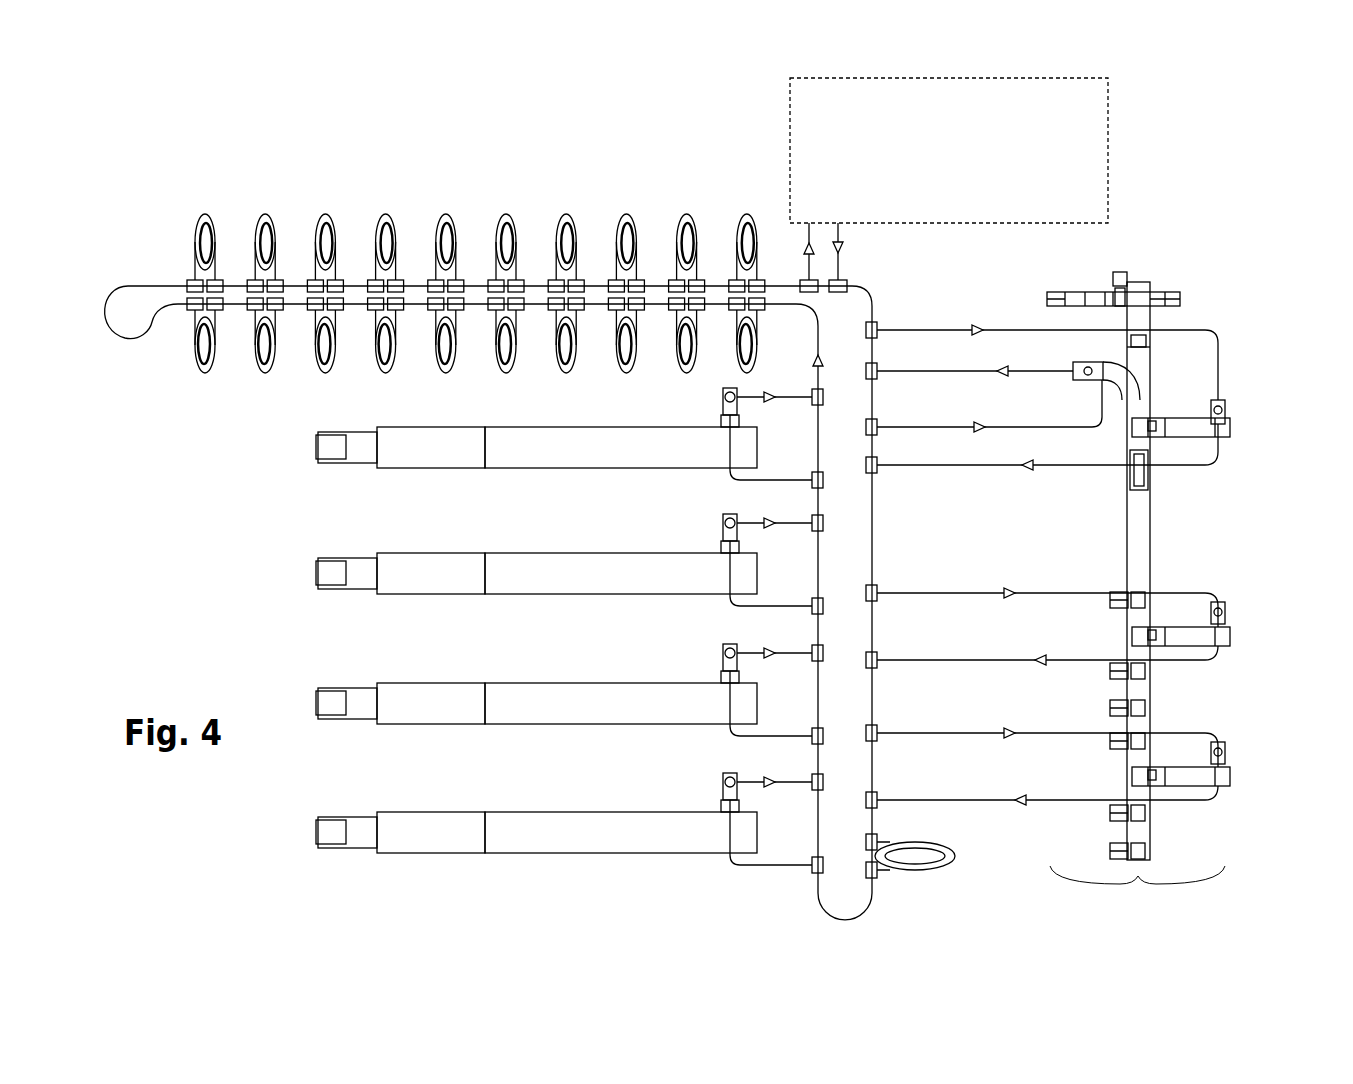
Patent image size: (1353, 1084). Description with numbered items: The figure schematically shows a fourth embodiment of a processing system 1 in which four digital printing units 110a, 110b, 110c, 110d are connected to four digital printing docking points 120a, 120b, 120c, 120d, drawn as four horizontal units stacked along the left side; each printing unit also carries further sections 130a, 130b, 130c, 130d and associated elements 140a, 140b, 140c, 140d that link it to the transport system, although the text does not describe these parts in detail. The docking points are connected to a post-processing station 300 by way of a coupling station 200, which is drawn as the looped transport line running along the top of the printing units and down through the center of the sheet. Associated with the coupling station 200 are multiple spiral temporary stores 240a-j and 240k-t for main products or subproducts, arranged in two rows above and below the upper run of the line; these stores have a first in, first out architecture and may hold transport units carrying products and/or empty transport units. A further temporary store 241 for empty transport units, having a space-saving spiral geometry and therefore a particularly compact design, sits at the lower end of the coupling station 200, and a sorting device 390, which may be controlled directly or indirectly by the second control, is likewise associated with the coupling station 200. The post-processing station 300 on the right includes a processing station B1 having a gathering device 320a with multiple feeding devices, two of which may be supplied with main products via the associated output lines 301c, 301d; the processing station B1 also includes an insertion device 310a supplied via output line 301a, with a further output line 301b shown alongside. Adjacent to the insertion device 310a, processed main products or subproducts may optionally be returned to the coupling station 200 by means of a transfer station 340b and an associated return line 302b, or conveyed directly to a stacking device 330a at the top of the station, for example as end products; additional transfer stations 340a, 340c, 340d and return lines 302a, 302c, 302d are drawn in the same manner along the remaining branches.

The processing system 1 is at (175, 183).
The coupling station 200 is at (795, 900).
The temporary stores 240a-j is at (763, 200).
The temporary stores 240k-t is at (763, 378).
The sorting device 390 is at (948, 157).
The post-processing station 300 is at (1170, 222).
The gathering device 320a is at (1069, 829).
The insertion device 310a is at (1142, 474).
The stacking device 330a is at (1172, 279).
The output line 301a is at (1015, 330).
The output line 301b is at (1017, 427).
The output line 301c is at (1062, 593).
The output line 301d is at (1062, 733).
The return line 302a is at (998, 465).
The return line 302b is at (1042, 371).
The return line 302c is at (1012, 660).
The return line 302d is at (1000, 800).
The transfer station 340a is at (1224, 408).
The transfer station 340b is at (1086, 375).
The transfer station 340c is at (1224, 612).
The transfer station 340d is at (1224, 752).
The processing station B1 is at (1137, 887).
The temporary store 241 is at (943, 885).
The digital printing unit 110a is at (316, 801).
The digital printing unit 110b is at (326, 671).
The digital printing unit 110c is at (330, 538).
The digital printing unit 110d is at (285, 446).
The digital printing docking point 120a is at (440, 834).
The digital printing docking point 120b is at (450, 707).
The digital printing docking point 120c is at (460, 575).
The digital printing docking point 120d is at (432, 450).
The actuator second section 130a is at (612, 833).
The actuator second section 130b is at (657, 703).
The actuator second section 130c is at (657, 572).
The actuator second section 130d is at (670, 450).
The actuator valve 140a is at (727, 790).
The actuator valve 140b is at (729, 660).
The actuator valve 140c is at (728, 535).
The actuator valve 140d is at (733, 400).